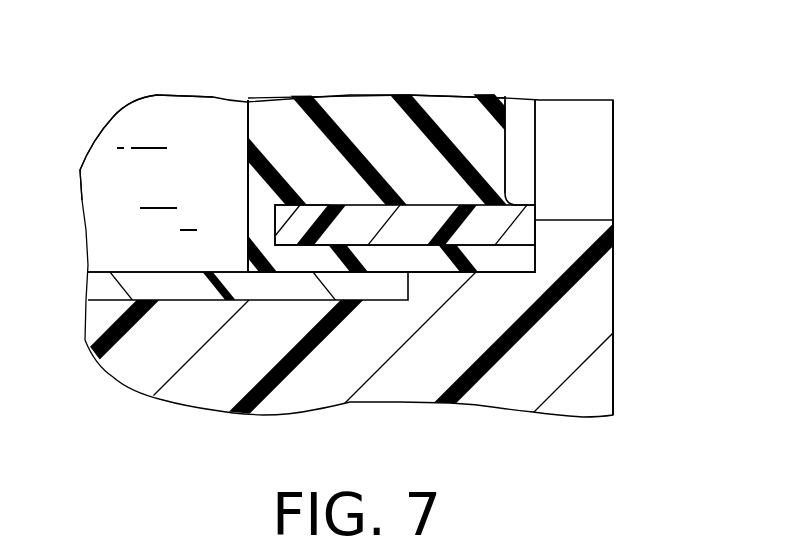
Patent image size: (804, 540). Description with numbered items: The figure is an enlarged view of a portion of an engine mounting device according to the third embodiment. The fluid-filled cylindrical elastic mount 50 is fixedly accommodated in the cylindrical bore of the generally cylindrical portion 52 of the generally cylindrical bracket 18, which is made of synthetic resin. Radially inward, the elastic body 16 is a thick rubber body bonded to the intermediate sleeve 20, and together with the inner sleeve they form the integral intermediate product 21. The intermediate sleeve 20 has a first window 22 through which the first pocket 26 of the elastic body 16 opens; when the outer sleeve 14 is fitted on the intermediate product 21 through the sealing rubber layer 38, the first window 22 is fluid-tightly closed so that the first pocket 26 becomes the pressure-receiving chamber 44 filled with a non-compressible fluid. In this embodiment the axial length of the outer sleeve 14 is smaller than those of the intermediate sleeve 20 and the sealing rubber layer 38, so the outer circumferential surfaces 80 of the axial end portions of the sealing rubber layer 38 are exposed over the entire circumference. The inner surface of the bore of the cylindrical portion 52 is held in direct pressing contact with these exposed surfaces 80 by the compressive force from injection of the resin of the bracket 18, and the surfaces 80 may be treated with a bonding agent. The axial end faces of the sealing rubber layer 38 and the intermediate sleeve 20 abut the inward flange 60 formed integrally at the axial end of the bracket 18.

The outer sleeve 14 is at (285, 290).
The elastic body 16 is at (460, 108).
The generally cylindrical bracket 18 is at (643, 390).
The intermediate sleeve 20 is at (400, 223).
The integral intermediate product 21 is at (530, 147).
The first window 22 is at (275, 218).
The first pocket 26 is at (247, 130).
The sealing rubber layer 38 is at (428, 262).
The pressure-receiving chamber 44 is at (113, 178).
The fluid-filled cylindrical elastic mount 50 is at (374, 332).
The generally cylindrical portion 52 is at (172, 350).
The inward flange 60 is at (575, 232).
The outer circumferential surface 80 is at (505, 275).